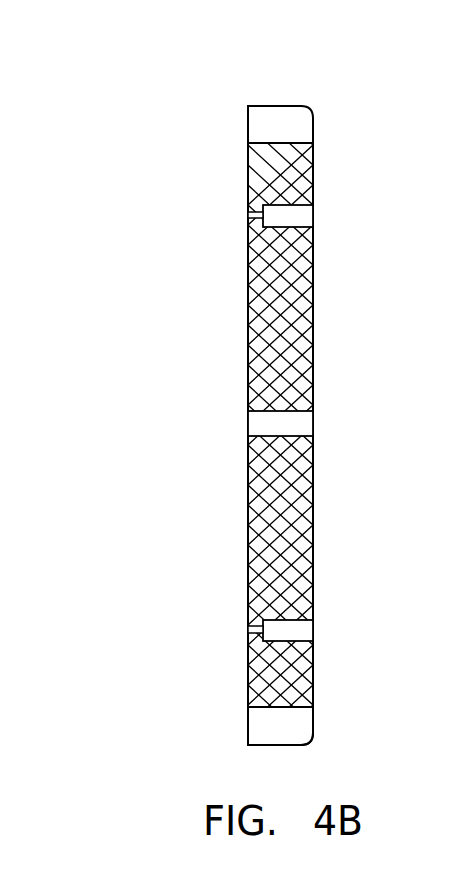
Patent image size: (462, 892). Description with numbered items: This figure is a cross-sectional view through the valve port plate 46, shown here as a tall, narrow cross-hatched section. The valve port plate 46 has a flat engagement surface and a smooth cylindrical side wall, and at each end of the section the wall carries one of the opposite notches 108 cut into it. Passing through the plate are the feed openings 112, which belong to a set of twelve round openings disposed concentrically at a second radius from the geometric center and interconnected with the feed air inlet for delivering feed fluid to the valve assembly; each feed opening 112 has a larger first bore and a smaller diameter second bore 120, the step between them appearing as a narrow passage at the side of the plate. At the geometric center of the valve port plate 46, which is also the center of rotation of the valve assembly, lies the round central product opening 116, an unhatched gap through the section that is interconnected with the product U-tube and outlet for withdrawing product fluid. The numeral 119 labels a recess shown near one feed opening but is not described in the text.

The valve port plate 46 is at (372, 137).
The notch 108 is at (311, 738).
The feed opening 112 is at (248, 628).
The central product opening 116 is at (306, 418).
The upper recess 119 is at (311, 214).
The second bore 120 is at (249, 205).